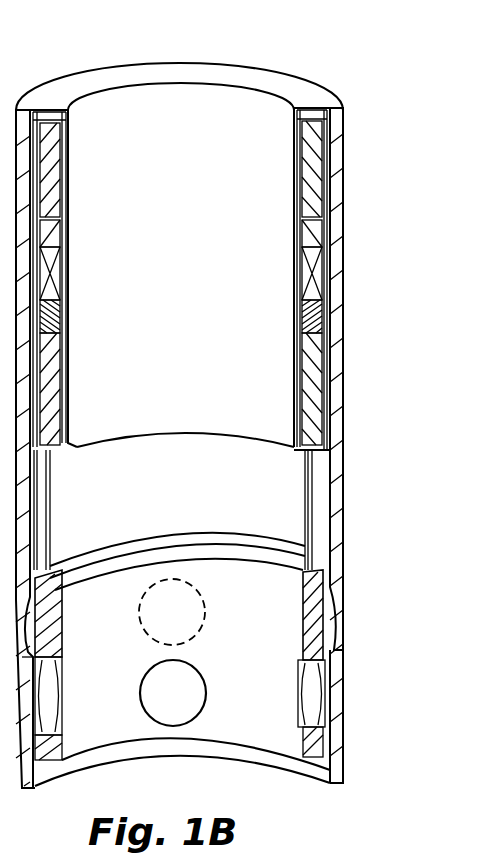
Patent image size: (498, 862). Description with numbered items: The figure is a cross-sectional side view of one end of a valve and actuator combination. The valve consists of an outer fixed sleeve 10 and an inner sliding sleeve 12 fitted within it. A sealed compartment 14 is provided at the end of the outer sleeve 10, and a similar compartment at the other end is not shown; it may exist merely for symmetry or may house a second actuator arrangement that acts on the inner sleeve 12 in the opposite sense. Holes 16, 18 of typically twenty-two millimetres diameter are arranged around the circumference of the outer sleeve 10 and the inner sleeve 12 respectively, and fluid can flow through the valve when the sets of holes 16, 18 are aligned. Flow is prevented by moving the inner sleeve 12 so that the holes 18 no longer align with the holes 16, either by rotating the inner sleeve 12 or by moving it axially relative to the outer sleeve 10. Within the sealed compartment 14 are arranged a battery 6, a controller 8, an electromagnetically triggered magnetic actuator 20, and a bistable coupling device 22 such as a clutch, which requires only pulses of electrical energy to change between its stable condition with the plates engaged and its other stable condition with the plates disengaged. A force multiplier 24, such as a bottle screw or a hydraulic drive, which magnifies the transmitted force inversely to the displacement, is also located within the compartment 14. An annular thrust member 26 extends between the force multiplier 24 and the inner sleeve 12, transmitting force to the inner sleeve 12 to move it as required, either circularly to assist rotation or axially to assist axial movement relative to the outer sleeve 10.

The sealed compartment 14 is at (290, 133).
The battery 6 is at (327, 136).
The controller 8 is at (324, 223).
The electromagnetically triggered magnetic actuator 20 is at (328, 270).
The bistable coupling device 22 is at (330, 323).
The force multiplier 24 is at (340, 407).
The annular thrust member 26 is at (345, 480).
The outer fixed sleeve 10 is at (347, 533).
The holes 16 is at (192, 583).
The inner sliding sleeve 12 is at (297, 637).
The holes 18 is at (303, 690).